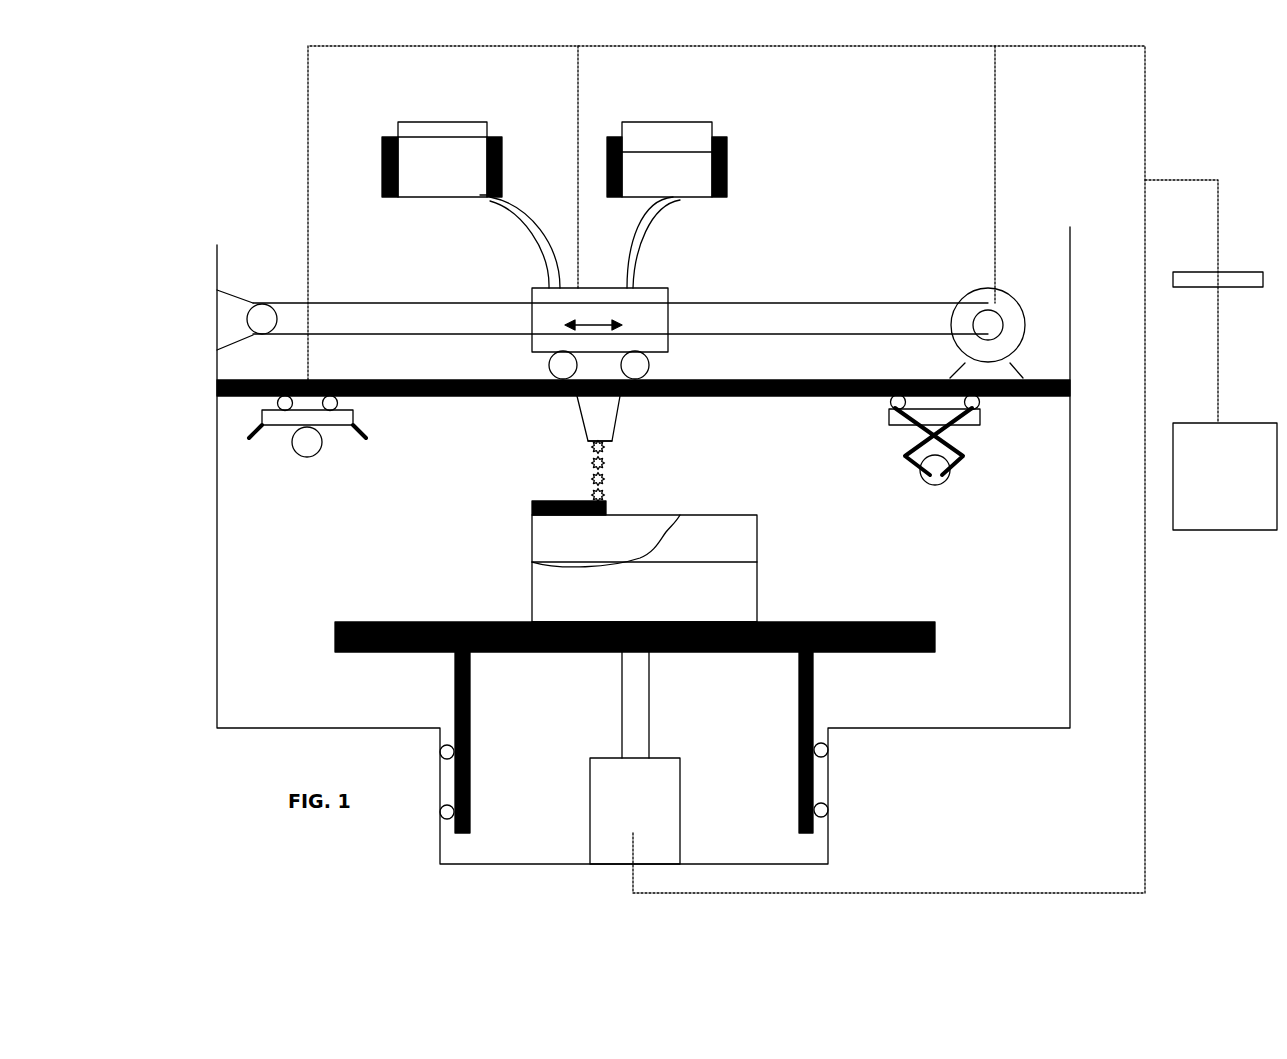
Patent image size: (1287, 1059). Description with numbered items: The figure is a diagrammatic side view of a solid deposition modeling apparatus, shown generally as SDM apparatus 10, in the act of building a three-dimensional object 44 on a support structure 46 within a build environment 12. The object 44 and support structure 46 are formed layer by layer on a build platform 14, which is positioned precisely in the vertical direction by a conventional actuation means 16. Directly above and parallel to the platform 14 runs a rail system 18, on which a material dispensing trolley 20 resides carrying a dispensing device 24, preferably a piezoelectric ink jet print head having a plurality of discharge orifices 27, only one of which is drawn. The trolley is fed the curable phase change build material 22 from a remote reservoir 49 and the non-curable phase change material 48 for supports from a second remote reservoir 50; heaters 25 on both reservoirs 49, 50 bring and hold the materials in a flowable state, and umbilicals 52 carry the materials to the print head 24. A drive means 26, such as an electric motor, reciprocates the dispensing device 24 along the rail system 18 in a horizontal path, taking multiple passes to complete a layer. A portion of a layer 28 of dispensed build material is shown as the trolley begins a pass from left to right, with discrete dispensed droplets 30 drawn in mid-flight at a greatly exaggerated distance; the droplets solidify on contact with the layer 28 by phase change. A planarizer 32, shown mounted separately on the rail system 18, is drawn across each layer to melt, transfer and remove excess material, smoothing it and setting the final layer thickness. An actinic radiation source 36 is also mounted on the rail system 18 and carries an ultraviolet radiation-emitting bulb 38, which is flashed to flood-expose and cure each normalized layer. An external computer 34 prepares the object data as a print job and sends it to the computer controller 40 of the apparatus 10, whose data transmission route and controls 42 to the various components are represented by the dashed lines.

The SDM apparatus 10 is at (263, 212).
The build environment 12 is at (771, 539).
The build platform 14 is at (351, 620).
The actuation means 16 is at (620, 818).
The rail system 18 is at (426, 396).
The material dispensing trolley 20 is at (605, 362).
The curable phase change build material 22 is at (457, 152).
The dispensing device 24 is at (577, 411).
The heaters 25 is at (378, 150).
The drive means 26 is at (965, 288).
The discharge orifices 27 is at (612, 445).
The layer 28 is at (548, 497).
The dispensed droplets 30 is at (606, 457).
The planarizer 32 is at (950, 487).
The external computer 34 is at (1230, 500).
The actinic radiation source 36 is at (277, 462).
The ultraviolet radiation-emitting bulb 38 is at (318, 445).
The computer controller 40 is at (1202, 290).
The data transmission route and controls 42 is at (938, 46).
The three-dimensional object 44 is at (650, 532).
The support structure 46 is at (710, 575).
The non-curable phase change material 48 is at (682, 167).
The remote reservoir 49 is at (412, 200).
The remote reservoir 50 is at (698, 202).
The umbilicals 52 is at (532, 228).